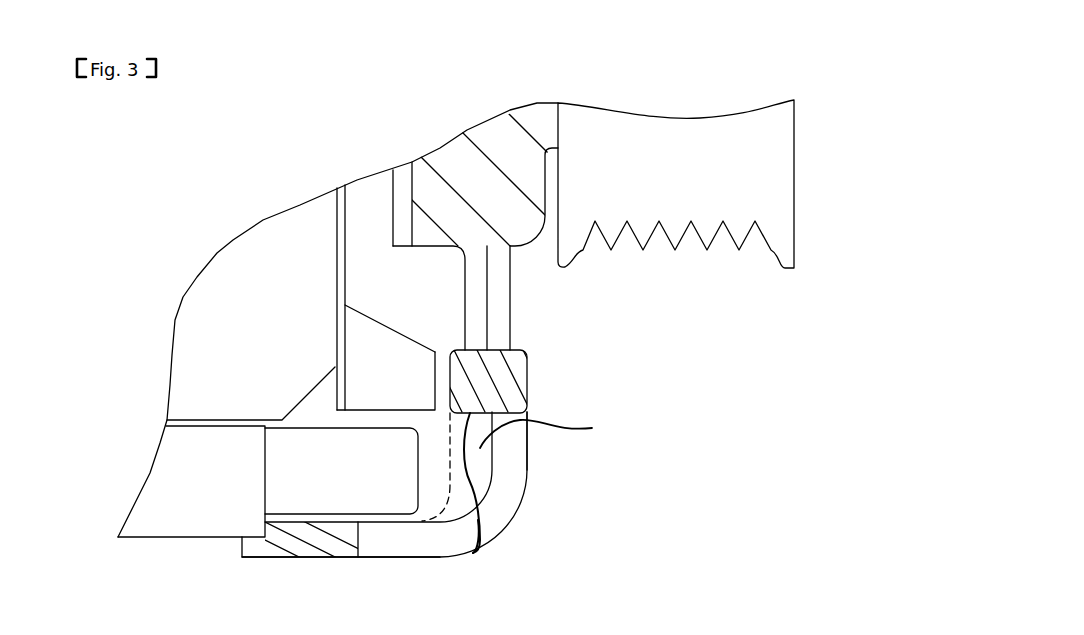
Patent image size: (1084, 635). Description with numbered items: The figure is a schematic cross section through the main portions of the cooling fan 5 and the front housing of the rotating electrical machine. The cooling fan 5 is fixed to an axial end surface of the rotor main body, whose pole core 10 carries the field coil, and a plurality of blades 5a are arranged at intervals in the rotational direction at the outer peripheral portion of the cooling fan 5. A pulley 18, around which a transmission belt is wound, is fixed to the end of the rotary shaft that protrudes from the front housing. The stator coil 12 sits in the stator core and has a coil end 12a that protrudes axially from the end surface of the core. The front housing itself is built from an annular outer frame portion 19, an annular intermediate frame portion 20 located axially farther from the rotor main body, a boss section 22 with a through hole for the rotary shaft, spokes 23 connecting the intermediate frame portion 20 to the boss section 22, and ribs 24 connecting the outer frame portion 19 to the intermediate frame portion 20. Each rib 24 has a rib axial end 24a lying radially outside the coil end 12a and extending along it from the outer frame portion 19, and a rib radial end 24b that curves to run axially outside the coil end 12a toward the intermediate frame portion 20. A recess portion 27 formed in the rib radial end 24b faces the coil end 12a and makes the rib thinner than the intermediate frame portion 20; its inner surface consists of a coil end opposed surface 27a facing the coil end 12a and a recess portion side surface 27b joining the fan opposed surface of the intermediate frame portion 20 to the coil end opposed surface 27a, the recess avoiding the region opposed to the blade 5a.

The cooling fan 5 is at (340, 307).
The blade 5a is at (370, 330).
The pole core 10 is at (277, 235).
The stator coil 12 is at (180, 538).
The coil end 12a is at (330, 467).
The pulley 18 is at (597, 110).
The outer frame portion 19 is at (300, 557).
The intermediate frame portion 20 is at (523, 363).
The boss section 22 is at (428, 163).
The spoke 23 is at (513, 300).
The rib 24 is at (530, 463).
The rib axial end 24a is at (403, 545).
The rib radial end 24b is at (515, 473).
The recess portion 27 is at (480, 472).
The coil end opposed surface 27a is at (562, 432).
The recess portion side surface 27b is at (483, 552).